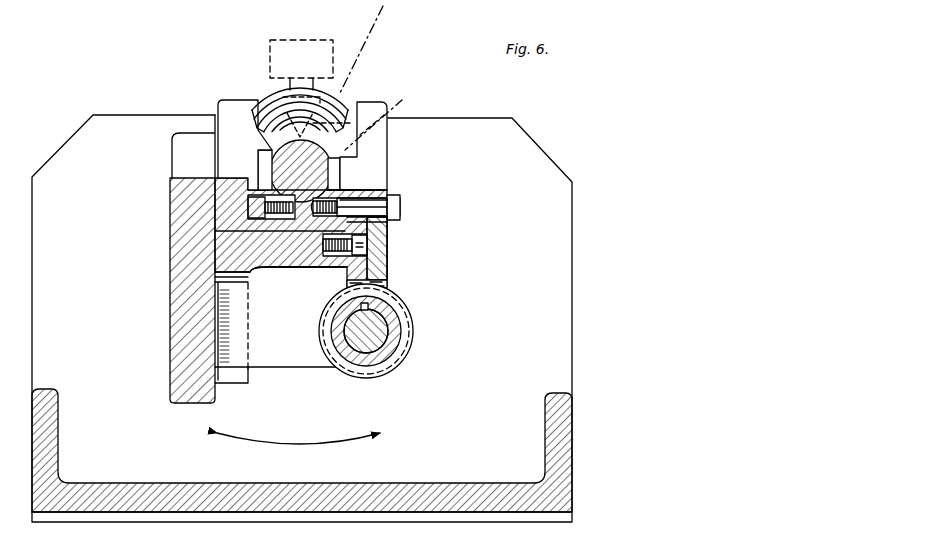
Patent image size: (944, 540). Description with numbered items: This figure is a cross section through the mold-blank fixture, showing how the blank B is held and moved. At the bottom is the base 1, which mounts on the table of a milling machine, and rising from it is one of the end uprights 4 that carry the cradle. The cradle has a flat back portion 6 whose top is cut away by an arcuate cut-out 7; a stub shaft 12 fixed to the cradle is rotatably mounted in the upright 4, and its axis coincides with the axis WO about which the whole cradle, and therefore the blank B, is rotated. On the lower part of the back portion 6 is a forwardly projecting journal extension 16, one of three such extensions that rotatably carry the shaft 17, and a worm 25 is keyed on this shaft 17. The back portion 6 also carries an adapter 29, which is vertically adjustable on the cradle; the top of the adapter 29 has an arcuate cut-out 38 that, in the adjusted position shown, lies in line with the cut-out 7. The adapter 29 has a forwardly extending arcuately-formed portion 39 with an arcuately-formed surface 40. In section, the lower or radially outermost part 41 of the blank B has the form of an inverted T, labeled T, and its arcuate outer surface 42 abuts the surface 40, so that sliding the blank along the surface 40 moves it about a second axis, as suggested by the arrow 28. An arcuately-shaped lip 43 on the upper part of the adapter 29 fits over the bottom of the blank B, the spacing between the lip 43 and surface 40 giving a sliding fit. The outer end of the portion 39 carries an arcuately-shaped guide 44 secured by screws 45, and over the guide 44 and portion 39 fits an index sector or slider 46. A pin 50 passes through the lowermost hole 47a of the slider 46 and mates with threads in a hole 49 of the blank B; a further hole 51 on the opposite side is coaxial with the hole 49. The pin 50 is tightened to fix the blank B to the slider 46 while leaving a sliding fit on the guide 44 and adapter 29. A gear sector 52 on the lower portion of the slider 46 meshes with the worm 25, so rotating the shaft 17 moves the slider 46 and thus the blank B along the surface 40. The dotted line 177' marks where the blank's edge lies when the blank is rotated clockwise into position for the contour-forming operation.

The base 1 is at (556, 499).
The end upright 4 is at (572, 290).
The back portion 6 is at (170, 312).
The arcuate cut-out 7 is at (185, 173).
The stub shaft 12 is at (388, 118).
The journal extension 16 is at (320, 367).
The shaft 17 is at (382, 322).
The worm 25 is at (414, 338).
The swing motion arrow 28 is at (322, 448).
The adapter 29 is at (234, 232).
The arcuate cut-out 38 is at (223, 168).
The arcuately-formed portion 39 is at (313, 255).
The arcuately-formed surface 40 is at (282, 229).
The radially outermost part of the blank 41 is at (333, 187).
The arcuate outer surface 42 is at (300, 231).
The arcuately-shaped lip 43 is at (222, 112).
The arcuately-shaped guide 44 is at (387, 238).
The screws 45 is at (387, 254).
The index sector or slider 46 is at (387, 230).
The lowermost hole 47a is at (387, 222).
The hole 49 is at (387, 191).
The pin 50 is at (403, 205).
The hole 51 is at (260, 207).
The gear sector 52 is at (387, 282).
The dotted line 177' is at (382, 49).
The blank B is at (263, 102).
The tool axis T is at (378, 115).
The axis WO is at (304, 184).